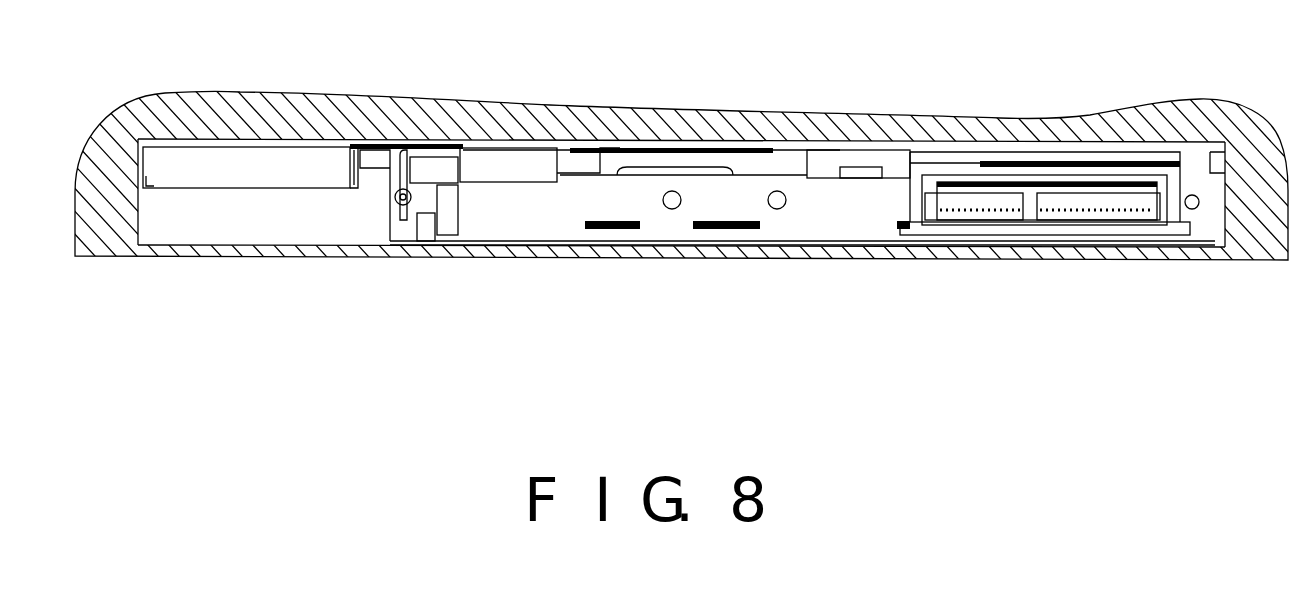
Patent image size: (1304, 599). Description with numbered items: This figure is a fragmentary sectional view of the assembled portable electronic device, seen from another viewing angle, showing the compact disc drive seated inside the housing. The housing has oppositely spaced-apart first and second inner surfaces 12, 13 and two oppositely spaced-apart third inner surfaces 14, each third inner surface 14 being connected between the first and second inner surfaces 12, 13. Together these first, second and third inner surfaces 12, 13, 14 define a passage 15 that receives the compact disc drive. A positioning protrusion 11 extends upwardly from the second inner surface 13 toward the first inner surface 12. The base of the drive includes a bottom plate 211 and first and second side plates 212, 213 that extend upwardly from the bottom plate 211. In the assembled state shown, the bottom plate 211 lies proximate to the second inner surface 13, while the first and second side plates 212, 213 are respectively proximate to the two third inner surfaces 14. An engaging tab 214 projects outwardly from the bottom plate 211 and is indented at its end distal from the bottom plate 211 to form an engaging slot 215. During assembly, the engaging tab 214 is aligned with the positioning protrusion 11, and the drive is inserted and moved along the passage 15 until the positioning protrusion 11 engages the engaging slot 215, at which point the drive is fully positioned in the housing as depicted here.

The positioning protrusion 11 is at (457, 226).
The first inner surface 12 is at (263, 146).
The second inner surface 13 is at (305, 246).
The third inner surfaces 14 is at (140, 208).
The passage 15 is at (236, 228).
The bottom plate 211 is at (1017, 240).
The first side plate 212 is at (140, 155).
The second side plate 213 is at (1227, 187).
The engaging tab 214 is at (403, 235).
The engaging slot 215 is at (433, 232).